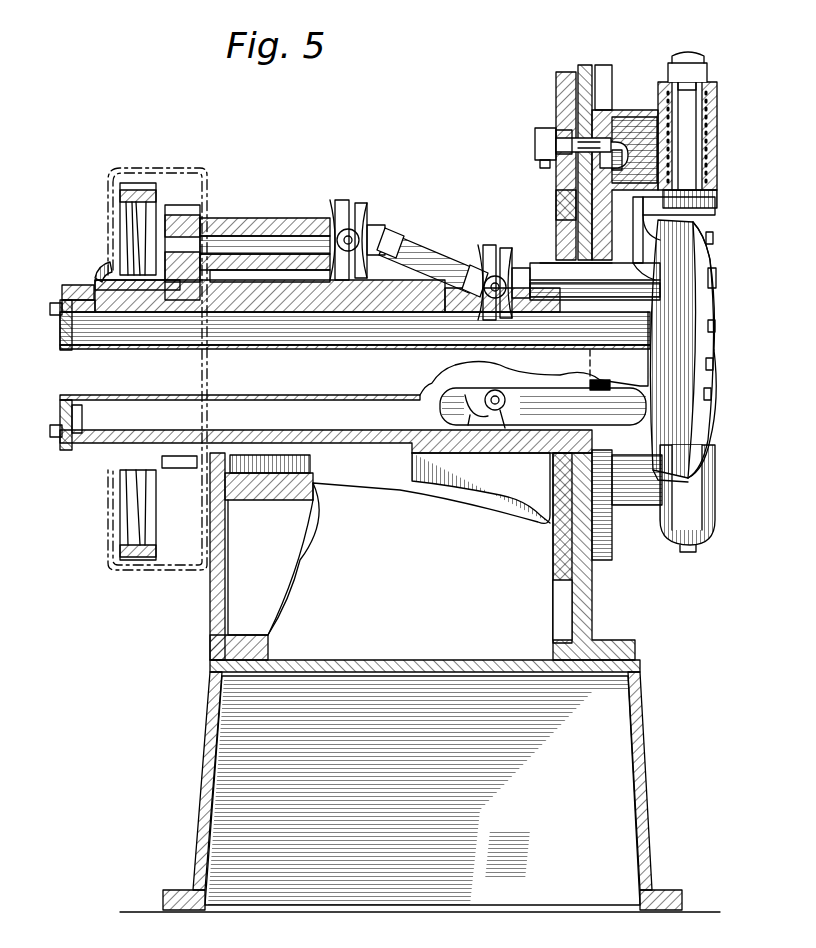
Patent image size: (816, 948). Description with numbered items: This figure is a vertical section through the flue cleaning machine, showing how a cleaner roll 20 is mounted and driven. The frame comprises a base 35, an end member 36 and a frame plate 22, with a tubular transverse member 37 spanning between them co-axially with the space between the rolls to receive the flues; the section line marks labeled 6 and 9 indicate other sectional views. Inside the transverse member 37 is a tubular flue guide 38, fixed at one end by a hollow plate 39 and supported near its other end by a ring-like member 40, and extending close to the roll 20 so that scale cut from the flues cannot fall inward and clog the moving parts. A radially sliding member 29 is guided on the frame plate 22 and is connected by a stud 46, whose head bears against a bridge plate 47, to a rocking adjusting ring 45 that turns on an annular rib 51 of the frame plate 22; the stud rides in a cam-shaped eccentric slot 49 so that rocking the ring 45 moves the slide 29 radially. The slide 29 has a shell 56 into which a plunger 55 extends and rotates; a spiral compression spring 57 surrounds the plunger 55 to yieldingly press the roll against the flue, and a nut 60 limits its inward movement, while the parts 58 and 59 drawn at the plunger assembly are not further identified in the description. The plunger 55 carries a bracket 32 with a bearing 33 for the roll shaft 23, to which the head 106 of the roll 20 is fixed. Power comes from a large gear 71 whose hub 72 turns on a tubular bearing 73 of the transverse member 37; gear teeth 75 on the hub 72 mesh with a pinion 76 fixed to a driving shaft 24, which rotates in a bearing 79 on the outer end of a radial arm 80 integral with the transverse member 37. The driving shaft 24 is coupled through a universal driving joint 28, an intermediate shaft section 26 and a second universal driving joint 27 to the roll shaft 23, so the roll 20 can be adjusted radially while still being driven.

The section line 6- 6 is at (160, 880).
The section line 9- 9 is at (560, 153).
The cleaner roll 20 is at (690, 328).
The frame plate 22 is at (585, 68).
The roll shaft 23 is at (710, 280).
The driving shaft 24 is at (290, 242).
The intermediate shaft section 26 is at (424, 252).
The universal driving joint 27 is at (496, 260).
The universal driving joint 28 is at (352, 212).
The radially sliding member 29 is at (628, 124).
The bracket 32 is at (664, 218).
The bearing 33 is at (595, 278).
The base 35 is at (644, 744).
The end member 36 is at (210, 644).
The tubular transverse member 37 is at (392, 446).
The tubular flue guide 38 is at (340, 343).
The hollow plate 39 is at (56, 432).
The ring-like member 40 is at (534, 370).
The rocking adjusting ring 45 is at (557, 84).
The stud 46 is at (545, 168).
The bridge plate 47 is at (548, 145).
The cam-shaped eccentric slot 49 is at (558, 138).
The annular rib 51 is at (557, 198).
The plunger 55 is at (703, 130).
The shell 56 is at (705, 116).
The spiral compression spring 57 is at (710, 92).
The pin 58 is at (688, 553).
The nut 59 is at (712, 194).
The nut 60 is at (700, 64).
The large gear 71 is at (120, 548).
The hub 72 is at (95, 278).
The tubular bearing 73 is at (56, 316).
The gear teeth 75 is at (178, 282).
The pinion 76 is at (186, 207).
The bearing 79 is at (243, 224).
The radial arm 80 is at (318, 290).
The head 106 is at (706, 252).